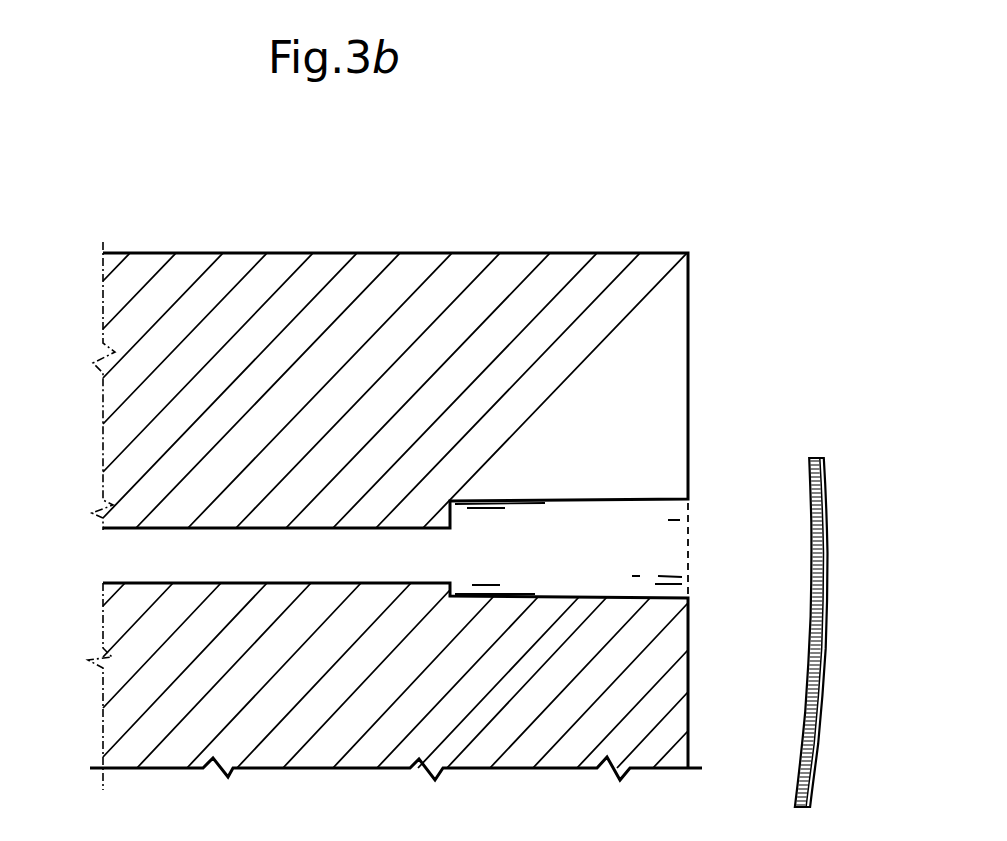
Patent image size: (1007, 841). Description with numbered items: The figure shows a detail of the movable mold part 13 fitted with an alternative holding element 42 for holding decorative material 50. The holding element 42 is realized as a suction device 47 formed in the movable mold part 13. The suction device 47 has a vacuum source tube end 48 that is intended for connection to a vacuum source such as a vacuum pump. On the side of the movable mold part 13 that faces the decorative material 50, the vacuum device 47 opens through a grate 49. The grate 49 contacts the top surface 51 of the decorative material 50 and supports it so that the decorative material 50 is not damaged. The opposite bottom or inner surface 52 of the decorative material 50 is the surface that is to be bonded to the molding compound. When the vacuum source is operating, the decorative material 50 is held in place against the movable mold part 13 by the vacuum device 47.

The movable mold part 13 is at (145, 307).
The holding element 42 is at (560, 189).
The suction device 47 is at (572, 538).
The vacuum source tube end 48 is at (120, 562).
The grate 49 is at (690, 520).
The decorative material 50 is at (810, 802).
The top surface 51 is at (798, 763).
The inner surface 52 is at (820, 703).